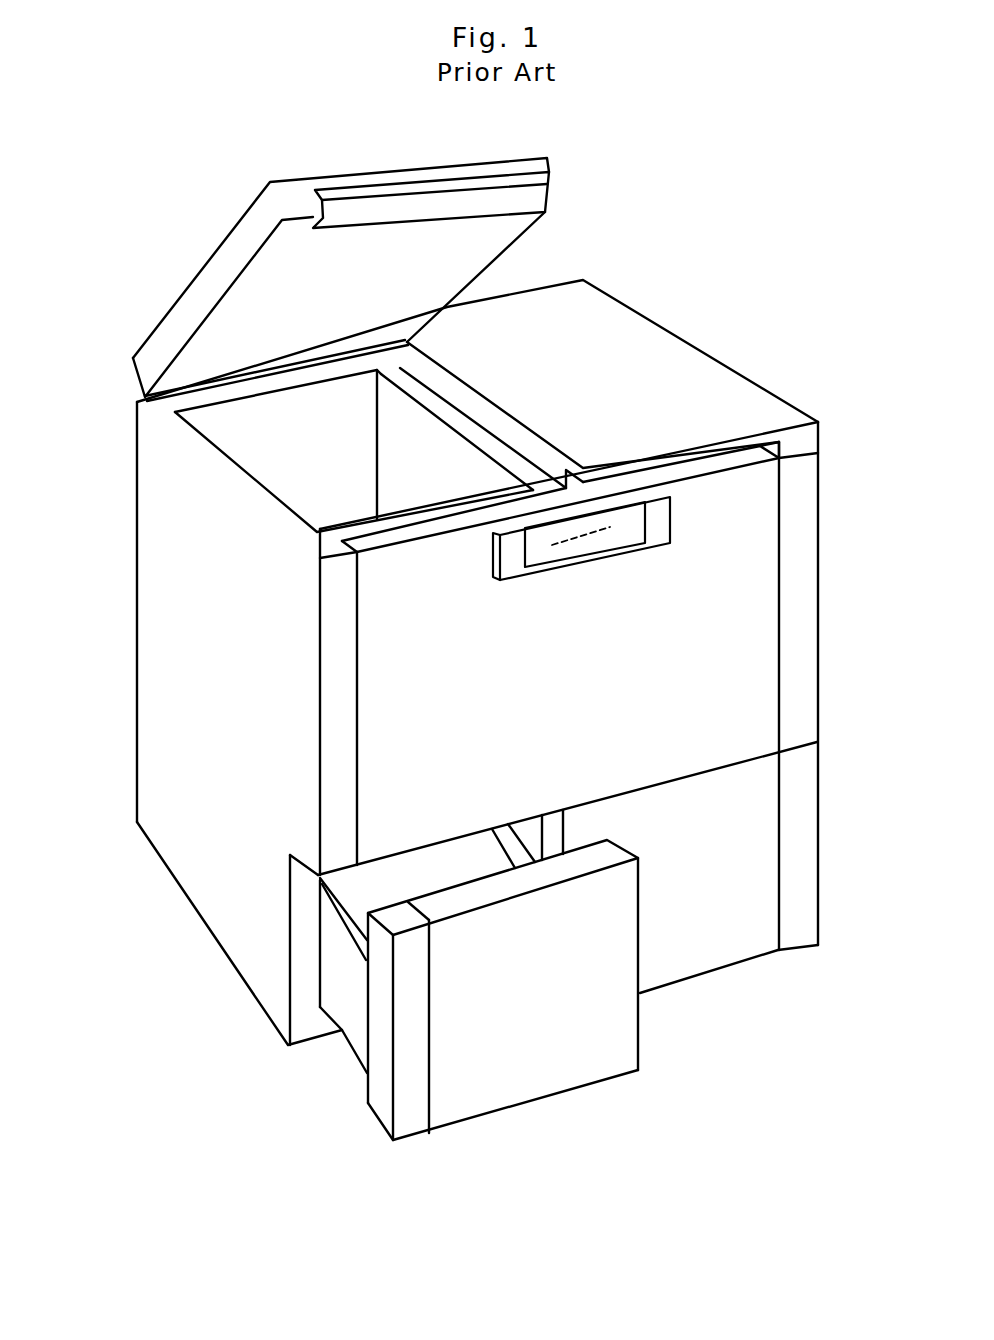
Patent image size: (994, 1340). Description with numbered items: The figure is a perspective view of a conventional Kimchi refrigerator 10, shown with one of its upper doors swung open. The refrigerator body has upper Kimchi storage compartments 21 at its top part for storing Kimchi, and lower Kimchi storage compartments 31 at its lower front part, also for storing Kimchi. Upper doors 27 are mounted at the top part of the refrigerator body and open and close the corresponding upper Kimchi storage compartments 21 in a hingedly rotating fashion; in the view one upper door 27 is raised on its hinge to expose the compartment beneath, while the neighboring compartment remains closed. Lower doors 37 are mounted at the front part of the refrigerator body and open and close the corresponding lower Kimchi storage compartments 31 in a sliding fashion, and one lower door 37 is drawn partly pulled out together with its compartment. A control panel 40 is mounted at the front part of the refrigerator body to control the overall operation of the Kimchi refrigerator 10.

The Kimchi refrigerator 10 is at (722, 306).
The upper door 27 is at (210, 284).
The upper Kimchi storage compartment 21 is at (293, 452).
The control panel 40 is at (675, 517).
The lower Kimchi storage compartment 31 is at (375, 892).
The lower door 37 is at (527, 1057).